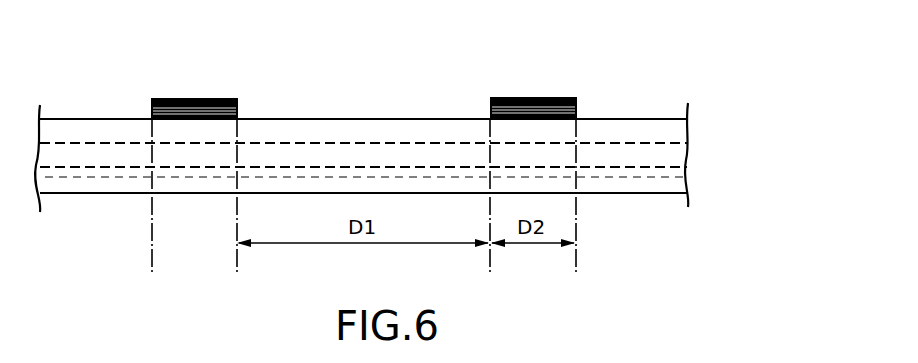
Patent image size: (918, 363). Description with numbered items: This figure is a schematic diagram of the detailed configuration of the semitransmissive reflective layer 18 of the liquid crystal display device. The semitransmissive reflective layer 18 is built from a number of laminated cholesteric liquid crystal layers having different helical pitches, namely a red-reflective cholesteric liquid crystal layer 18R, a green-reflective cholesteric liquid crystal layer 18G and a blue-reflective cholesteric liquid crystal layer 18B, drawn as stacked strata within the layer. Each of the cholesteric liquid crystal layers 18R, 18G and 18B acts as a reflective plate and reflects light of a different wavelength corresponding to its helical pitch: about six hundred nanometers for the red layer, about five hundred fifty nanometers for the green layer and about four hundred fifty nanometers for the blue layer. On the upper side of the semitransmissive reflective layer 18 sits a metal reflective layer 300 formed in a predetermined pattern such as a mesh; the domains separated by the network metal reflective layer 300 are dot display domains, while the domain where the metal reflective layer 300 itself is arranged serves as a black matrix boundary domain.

The semitransmissive reflective layer 18 is at (785, 112).
The red-reflective cholesteric liquid crystal layer 18R is at (690, 124).
The green-reflective cholesteric liquid crystal layer 18G is at (690, 152).
The blue-reflective cholesteric liquid crystal layer 18B is at (690, 176).
The metal reflective layer 300 is at (533, 96).